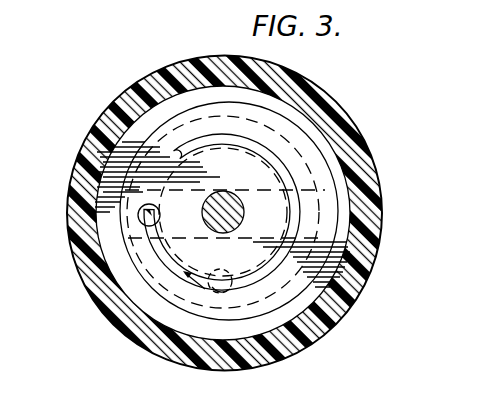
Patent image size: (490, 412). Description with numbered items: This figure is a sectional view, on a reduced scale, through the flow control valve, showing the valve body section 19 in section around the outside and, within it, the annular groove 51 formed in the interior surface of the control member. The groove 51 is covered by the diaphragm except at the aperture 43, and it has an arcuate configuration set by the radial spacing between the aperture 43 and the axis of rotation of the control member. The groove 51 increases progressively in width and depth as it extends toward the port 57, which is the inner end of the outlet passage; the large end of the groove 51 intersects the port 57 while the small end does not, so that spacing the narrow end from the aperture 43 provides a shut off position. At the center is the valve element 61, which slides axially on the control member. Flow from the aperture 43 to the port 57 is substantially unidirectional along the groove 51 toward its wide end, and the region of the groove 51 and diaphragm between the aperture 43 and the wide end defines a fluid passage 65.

The valve body section 19 is at (177, 62).
The aperture 43 is at (231, 281).
The groove 51 is at (285, 188).
The port 57 is at (143, 209).
The valve element 61 is at (251, 172).
The fluid passage 65 is at (158, 266).